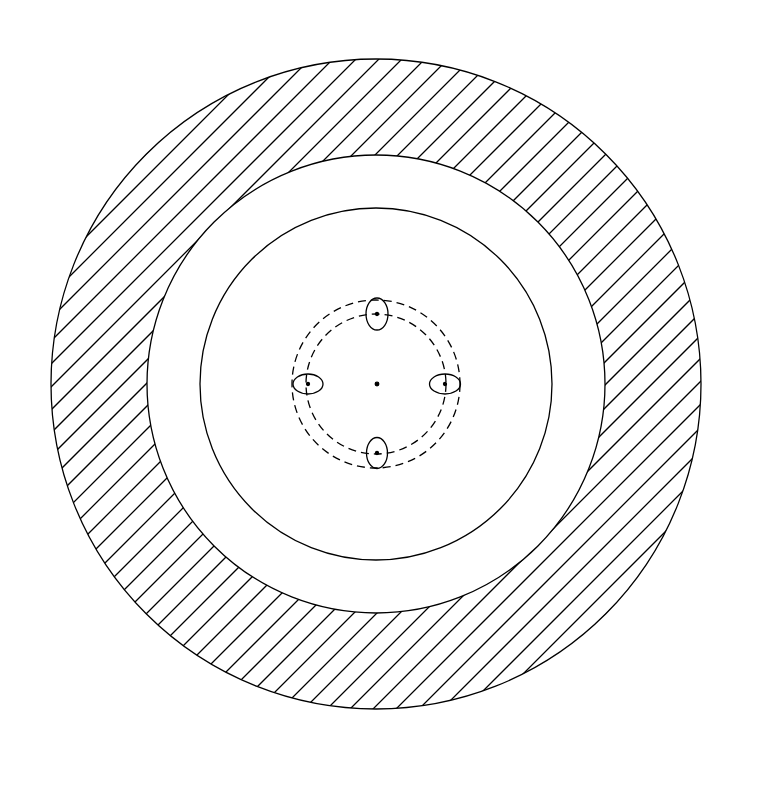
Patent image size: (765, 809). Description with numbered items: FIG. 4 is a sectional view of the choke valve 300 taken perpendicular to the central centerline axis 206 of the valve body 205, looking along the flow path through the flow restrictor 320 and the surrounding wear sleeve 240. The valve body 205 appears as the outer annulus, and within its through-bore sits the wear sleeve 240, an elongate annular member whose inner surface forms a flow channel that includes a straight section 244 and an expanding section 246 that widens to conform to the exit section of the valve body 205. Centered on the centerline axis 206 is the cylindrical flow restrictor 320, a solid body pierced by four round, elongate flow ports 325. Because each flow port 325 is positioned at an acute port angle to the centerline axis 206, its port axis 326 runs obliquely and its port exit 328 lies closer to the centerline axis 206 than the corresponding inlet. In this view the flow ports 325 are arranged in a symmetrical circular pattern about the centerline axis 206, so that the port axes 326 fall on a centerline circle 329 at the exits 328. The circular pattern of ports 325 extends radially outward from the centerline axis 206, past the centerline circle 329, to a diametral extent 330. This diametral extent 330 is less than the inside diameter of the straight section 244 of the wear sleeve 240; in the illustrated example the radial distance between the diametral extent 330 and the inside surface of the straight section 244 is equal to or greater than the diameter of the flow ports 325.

The choke valve 300 is at (623, 62).
The valve body 205 is at (110, 263).
The wear sleeve 240 is at (160, 353).
The expanding section 246 is at (162, 400).
The flow restrictor 320 is at (223, 413).
The straight section 244 is at (243, 498).
The centerline axis 206 is at (377, 384).
The flow ports 325 is at (366, 308).
The port axis 326 is at (377, 314).
The port exit 328 is at (386, 305).
The centerline circle 329 is at (423, 435).
The diametral extent 330 is at (445, 337).